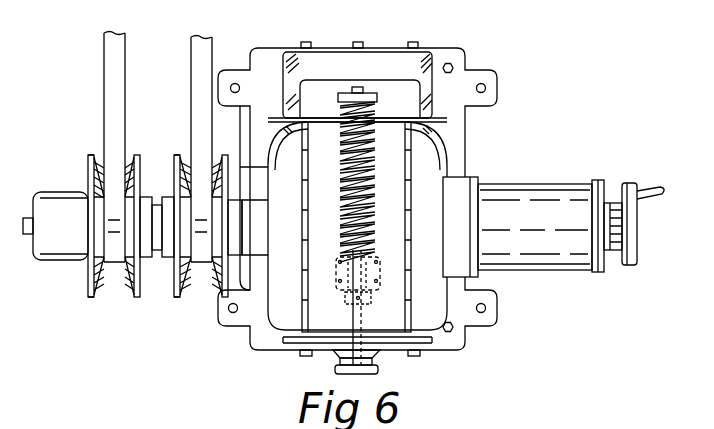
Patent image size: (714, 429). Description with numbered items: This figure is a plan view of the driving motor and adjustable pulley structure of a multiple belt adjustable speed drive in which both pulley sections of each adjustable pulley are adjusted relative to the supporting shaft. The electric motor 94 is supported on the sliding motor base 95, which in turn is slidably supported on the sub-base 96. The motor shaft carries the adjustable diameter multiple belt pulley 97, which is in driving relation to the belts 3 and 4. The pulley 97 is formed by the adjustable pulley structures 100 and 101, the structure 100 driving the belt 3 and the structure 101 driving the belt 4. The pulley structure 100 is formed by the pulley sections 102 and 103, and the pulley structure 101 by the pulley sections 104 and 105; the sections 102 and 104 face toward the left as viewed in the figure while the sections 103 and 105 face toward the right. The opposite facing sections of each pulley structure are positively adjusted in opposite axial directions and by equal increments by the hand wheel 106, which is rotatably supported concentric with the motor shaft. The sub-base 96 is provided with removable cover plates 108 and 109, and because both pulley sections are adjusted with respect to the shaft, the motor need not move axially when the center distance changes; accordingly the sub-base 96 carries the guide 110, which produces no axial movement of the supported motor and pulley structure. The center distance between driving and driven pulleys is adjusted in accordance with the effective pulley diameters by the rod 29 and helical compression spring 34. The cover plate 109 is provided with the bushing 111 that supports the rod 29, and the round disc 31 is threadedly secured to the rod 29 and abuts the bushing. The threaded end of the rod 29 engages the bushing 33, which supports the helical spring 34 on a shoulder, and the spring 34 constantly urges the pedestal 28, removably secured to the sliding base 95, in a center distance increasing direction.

The belt 3 is at (198, 92).
The belt 4 is at (112, 92).
The pedestal 28 is at (341, 268).
The rod 29 is at (357, 318).
The round disc 31 is at (376, 372).
The bushing 33 is at (372, 97).
The helical compression spring 34 is at (360, 208).
The electric motor 94 is at (397, 162).
The sliding motor base 95 is at (428, 131).
The sub-base 96 is at (453, 118).
The adjustable diameter multiple belt pulley 97 is at (160, 344).
The adjustable pulley structure 100 is at (180, 157).
The adjustable pulley structure 101 is at (92, 156).
The pulley section 102 is at (217, 297).
The pulley section 103 is at (190, 283).
The pulley section 104 is at (131, 297).
The pulley section 105 is at (93, 297).
The hand wheel 106 is at (636, 240).
The removable cover plate 108 is at (373, 46).
The removable cover plate 109 is at (392, 351).
The guide 110 is at (290, 72).
The bushing 111 is at (342, 351).